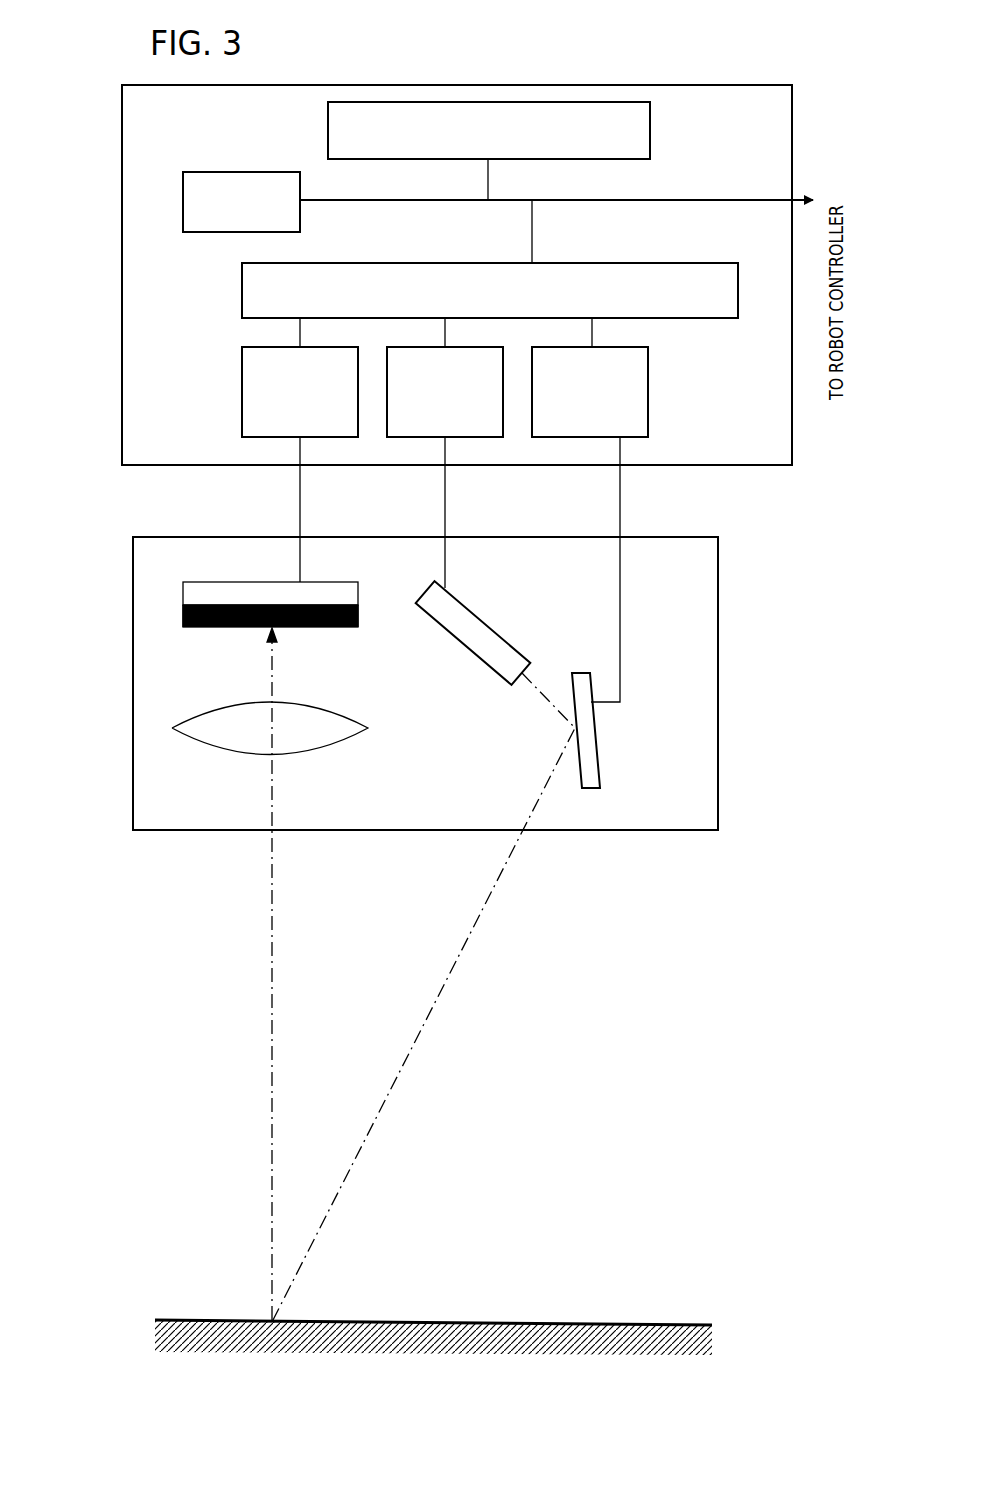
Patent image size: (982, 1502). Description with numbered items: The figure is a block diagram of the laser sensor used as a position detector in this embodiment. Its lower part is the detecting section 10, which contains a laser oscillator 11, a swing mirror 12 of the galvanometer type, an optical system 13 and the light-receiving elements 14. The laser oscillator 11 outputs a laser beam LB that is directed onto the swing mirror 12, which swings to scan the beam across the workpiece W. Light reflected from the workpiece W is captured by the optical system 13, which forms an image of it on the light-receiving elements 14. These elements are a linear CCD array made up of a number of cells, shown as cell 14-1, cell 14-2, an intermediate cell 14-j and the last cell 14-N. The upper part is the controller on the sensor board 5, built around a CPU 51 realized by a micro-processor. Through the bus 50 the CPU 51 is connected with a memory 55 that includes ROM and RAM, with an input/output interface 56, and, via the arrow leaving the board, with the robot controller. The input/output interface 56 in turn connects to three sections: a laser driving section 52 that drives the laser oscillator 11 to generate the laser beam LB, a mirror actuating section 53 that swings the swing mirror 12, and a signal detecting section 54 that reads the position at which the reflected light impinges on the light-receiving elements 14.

The sensor board 5 is at (583, 80).
The memory 55 is at (650, 130).
The CPU 51 is at (250, 171).
The bus 50 is at (672, 203).
The input/output interface 56 is at (330, 263).
The signal detecting section 54 is at (264, 437).
The laser driving section 52 is at (412, 437).
The mirror actuating section 53 is at (562, 437).
The detecting section 10 is at (718, 765).
The light-receiving elements 14 is at (208, 582).
The cell 14-1 is at (188, 627).
The cell 14-2 is at (196, 628).
The cell 14-j is at (264, 633).
The cell 14-N is at (350, 627).
The optical system 13 is at (192, 745).
The laser oscillator 11 is at (470, 603).
The swing mirror 12 is at (600, 748).
The laser beam LB is at (455, 965).
The workpiece W is at (448, 1320).